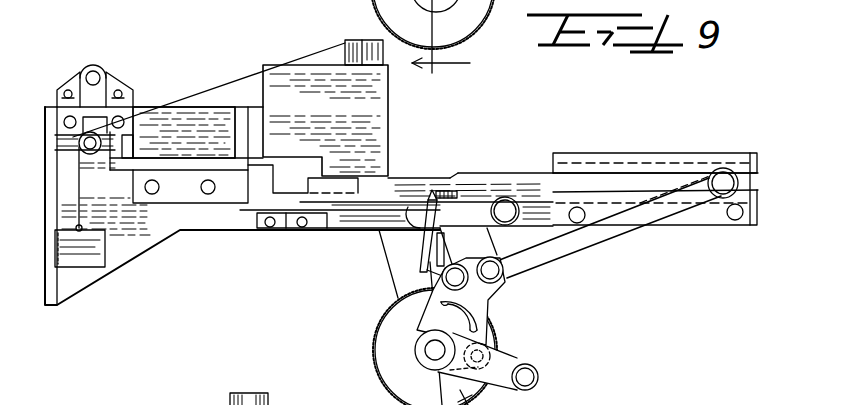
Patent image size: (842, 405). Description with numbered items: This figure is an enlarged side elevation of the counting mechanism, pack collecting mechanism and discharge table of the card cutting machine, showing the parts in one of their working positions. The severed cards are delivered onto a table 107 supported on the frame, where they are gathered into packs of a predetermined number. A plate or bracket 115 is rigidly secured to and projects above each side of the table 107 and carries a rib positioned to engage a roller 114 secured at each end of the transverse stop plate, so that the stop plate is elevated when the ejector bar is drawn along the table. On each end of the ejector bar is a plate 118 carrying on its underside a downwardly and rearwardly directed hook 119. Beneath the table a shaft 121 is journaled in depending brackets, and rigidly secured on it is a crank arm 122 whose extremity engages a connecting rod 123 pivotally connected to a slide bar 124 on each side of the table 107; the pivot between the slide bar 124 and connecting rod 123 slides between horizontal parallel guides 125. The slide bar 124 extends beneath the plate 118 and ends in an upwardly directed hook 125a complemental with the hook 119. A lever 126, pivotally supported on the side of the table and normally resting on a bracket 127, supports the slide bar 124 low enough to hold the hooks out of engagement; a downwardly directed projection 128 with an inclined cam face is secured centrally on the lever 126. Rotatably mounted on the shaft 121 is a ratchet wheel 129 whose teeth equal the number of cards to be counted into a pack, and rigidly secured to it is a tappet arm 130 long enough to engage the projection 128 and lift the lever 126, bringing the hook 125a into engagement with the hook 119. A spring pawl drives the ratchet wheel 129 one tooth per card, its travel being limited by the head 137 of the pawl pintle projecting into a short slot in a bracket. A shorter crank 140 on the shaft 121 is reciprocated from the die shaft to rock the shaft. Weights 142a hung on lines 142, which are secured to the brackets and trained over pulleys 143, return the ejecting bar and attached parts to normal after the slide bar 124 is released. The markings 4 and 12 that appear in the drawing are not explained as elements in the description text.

The machine frame part 4 is at (292, 196).
The direction of movement arrow / feed 12 is at (441, 76).
The table 107 is at (528, 174).
The roller 114 is at (281, 395).
The plate or bracket 115 is at (386, 123).
The plate 118 is at (280, 157).
The hook 119 is at (299, 185).
The shaft 121 is at (433, 350).
The crank arm 122 is at (494, 293).
The connecting rod 123 is at (612, 228).
The slide bar 124 is at (540, 185).
The horizontal parallel guides 125 is at (742, 166).
The upwardly directed hook 125a is at (303, 170).
The lever 126 is at (394, 200).
The bracket 127 is at (331, 224).
The projection 128 is at (431, 200).
The ratchet wheel 129 is at (466, 18).
The tappet arm 130 is at (422, 257).
The head of the pintle 137 is at (398, 291).
The crank 140 is at (507, 385).
The line 142 is at (86, 226).
The weight 142a is at (105, 262).
The pulley 143 is at (93, 152).